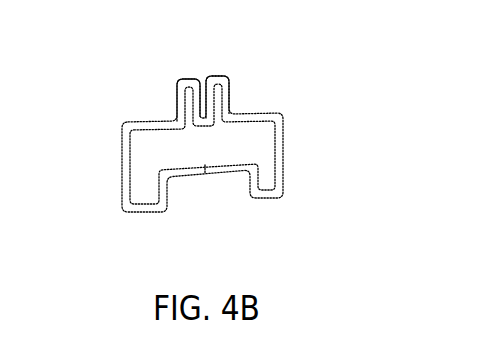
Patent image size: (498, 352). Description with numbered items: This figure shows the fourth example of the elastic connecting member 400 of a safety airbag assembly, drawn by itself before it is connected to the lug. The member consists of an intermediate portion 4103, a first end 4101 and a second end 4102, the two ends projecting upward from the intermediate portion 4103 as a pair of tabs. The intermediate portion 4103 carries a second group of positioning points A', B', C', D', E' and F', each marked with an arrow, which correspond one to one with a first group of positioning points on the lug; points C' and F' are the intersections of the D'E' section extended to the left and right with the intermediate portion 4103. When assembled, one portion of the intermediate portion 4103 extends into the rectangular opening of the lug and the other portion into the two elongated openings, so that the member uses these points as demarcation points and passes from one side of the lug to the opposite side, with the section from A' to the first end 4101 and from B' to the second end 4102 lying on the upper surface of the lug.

The elastic connecting member 400 is at (208, 114).
The first end 4101 is at (200, 88).
The second end 4102 is at (203, 84).
The intermediate portion 4103 is at (279, 146).